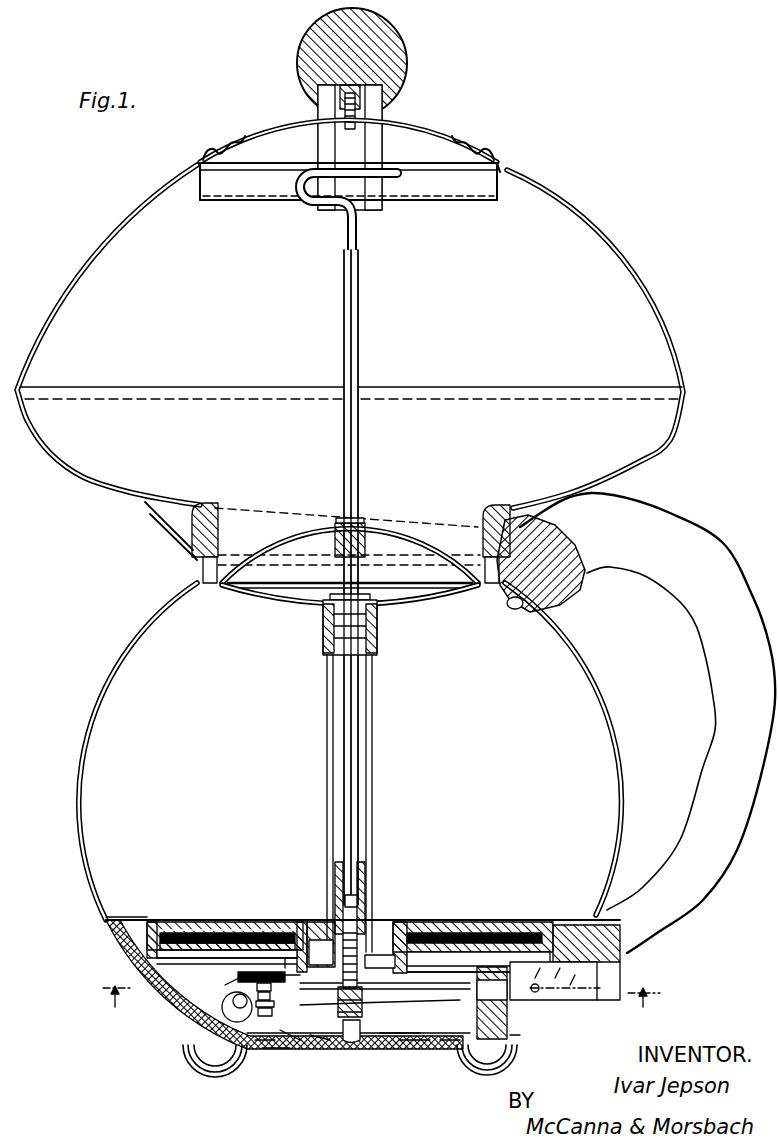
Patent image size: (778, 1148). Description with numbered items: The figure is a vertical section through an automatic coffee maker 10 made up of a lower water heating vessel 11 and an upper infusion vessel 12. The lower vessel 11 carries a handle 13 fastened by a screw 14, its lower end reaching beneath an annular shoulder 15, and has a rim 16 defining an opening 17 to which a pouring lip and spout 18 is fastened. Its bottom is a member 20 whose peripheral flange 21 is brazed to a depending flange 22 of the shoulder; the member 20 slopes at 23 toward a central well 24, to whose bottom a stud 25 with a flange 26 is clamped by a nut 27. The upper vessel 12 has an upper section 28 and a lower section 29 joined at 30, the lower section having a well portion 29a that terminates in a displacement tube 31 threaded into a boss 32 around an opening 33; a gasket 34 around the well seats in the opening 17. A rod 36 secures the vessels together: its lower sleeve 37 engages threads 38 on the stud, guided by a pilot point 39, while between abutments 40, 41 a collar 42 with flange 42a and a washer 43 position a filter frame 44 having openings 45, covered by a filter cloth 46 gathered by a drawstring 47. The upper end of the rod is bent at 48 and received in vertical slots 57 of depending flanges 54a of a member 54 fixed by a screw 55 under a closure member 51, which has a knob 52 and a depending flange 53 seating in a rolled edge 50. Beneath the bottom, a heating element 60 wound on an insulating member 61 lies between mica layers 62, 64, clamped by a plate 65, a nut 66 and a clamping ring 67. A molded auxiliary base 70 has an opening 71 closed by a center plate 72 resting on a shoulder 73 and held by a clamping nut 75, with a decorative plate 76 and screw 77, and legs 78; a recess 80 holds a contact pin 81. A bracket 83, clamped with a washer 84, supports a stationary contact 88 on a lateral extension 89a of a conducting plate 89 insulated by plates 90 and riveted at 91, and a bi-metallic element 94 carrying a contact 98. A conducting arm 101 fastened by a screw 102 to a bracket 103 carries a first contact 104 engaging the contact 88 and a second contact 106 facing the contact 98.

The coffee maker 10 is at (322, 1084).
The lower water heating vessel 11 is at (95, 702).
The upper coffee infusion vessel 12 is at (650, 300).
The handle 13 is at (716, 673).
The screw 14 is at (520, 612).
The annular shoulder 15 is at (106, 916).
The rim 16 is at (490, 592).
The opening 17 is at (206, 586).
The pouring lip and spout 18 is at (165, 520).
The bottom member 20 is at (184, 920).
The peripheral flange 21 is at (114, 930).
The depending flange 22 is at (120, 946).
The sloped portion 23 is at (420, 920).
The central well 24 is at (310, 928).
The stud 25 is at (319, 948).
The flange 26 is at (319, 961).
The nut 27 is at (360, 995).
The upper section 28 is at (603, 236).
The lower section 29 is at (648, 463).
The well portion 29a is at (487, 530).
The joint 30 is at (688, 395).
The displacement tube 31 is at (374, 714).
The threaded boss 32 is at (380, 626).
The opening 33 is at (304, 600).
The gasket 34 is at (213, 505).
The rod 36 is at (360, 470).
The internally threaded sleeve 37 is at (372, 880).
The threads 38 is at (368, 912).
The pilot point 39 is at (360, 895).
The abutment 40 is at (360, 518).
The abutment 41 is at (380, 608).
The collar 42 is at (410, 545).
The flange 42a is at (345, 522).
The washer 43 is at (366, 540).
The filter frame 44 is at (422, 568).
The openings 45 is at (263, 562).
The filter cloth 46 is at (290, 558).
The drawstring 47 is at (277, 593).
The bent end 48 is at (305, 196).
The rolled edge 50 is at (508, 170).
The closure member 51 is at (424, 122).
The knob 52 is at (404, 48).
The depending flange 53 is at (500, 190).
The member 54 is at (305, 122).
The depending flanges 54a is at (388, 205).
The screw 55 is at (362, 133).
The vertical slots 57 is at (388, 152).
The main heating element 60 is at (192, 962).
The annular insulating member 61 is at (215, 924).
The mica layer 62 is at (202, 932).
The mica layer 64 is at (205, 962).
The annular clamping plate 65 is at (240, 995).
The nut 66 is at (285, 940).
The clamping ring 67 is at (150, 962).
The auxiliary base 70 is at (185, 992).
The opening 71 is at (262, 1050).
The center plate 72 is at (270, 1055).
The shoulder 73 is at (510, 1045).
The clamping nut 75 is at (362, 1050).
The decorative plate 76 is at (362, 1055).
The screw 77 is at (346, 1050).
The legs 78 is at (195, 1054).
The recess 80 is at (600, 985).
The contact pin 81 is at (559, 978).
The bracket 83 is at (420, 990).
The washer 84 is at (380, 960).
The stationary contact 88 is at (272, 995).
The conducting plate 89 is at (420, 1005).
The lateral extension 89a is at (285, 1045).
The insulating plates 90 is at (448, 990).
The rivets 91 is at (450, 925).
The bi-metallic element 94 is at (222, 1007).
The contact 98 is at (272, 982).
The conducting arm 101 is at (320, 1050).
The screw 102 is at (405, 1055).
The bracket 103 is at (448, 1050).
The first contact 104 is at (272, 1010).
The second contact 106 is at (210, 1036).